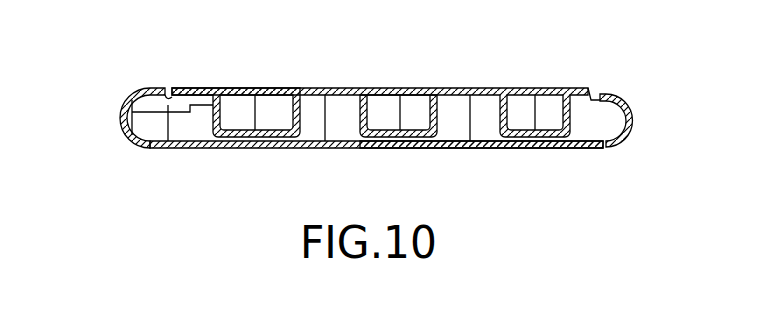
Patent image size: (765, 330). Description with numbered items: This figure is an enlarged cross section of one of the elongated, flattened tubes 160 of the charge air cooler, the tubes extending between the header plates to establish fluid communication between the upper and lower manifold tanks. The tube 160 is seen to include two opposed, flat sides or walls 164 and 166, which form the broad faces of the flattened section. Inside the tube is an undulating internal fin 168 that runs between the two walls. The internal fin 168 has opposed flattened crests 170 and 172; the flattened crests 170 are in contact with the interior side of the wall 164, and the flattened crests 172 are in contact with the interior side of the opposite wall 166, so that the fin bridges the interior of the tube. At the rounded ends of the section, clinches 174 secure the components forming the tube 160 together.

The tube 160 is at (543, 90).
The flat side or wall 164 is at (408, 95).
The flat side or wall 166 is at (418, 138).
The undulating internal fin 168 is at (313, 122).
The flattened crest 170 is at (197, 90).
The flattened crest 172 is at (256, 138).
The clinch 174 is at (138, 90).